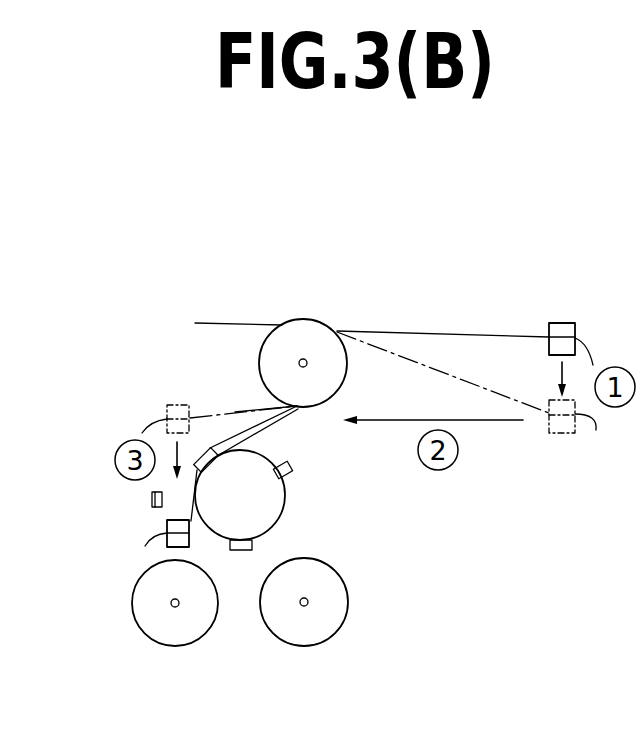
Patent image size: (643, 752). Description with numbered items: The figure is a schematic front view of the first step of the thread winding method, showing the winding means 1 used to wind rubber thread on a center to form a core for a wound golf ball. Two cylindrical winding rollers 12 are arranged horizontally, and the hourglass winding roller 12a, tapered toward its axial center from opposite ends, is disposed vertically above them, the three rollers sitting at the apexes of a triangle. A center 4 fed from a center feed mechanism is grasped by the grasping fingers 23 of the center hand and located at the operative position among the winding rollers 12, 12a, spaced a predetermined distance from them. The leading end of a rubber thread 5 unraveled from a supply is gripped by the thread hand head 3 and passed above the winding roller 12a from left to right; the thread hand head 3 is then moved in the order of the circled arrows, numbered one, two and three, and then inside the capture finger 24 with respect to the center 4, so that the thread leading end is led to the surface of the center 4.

The winding means 1 is at (418, 637).
The thread hand head 3 is at (563, 328).
The center 4 is at (263, 508).
The rubber thread 5 is at (465, 332).
The cylindrical winding roller 12 is at (162, 635).
The hourglass winding roller 12a is at (305, 330).
The grasping finger 23 is at (208, 453).
The capture finger 24 is at (150, 502).